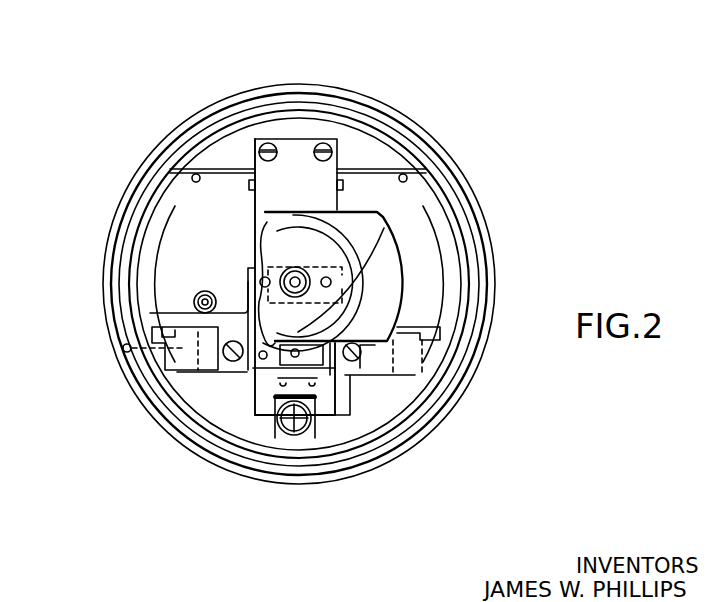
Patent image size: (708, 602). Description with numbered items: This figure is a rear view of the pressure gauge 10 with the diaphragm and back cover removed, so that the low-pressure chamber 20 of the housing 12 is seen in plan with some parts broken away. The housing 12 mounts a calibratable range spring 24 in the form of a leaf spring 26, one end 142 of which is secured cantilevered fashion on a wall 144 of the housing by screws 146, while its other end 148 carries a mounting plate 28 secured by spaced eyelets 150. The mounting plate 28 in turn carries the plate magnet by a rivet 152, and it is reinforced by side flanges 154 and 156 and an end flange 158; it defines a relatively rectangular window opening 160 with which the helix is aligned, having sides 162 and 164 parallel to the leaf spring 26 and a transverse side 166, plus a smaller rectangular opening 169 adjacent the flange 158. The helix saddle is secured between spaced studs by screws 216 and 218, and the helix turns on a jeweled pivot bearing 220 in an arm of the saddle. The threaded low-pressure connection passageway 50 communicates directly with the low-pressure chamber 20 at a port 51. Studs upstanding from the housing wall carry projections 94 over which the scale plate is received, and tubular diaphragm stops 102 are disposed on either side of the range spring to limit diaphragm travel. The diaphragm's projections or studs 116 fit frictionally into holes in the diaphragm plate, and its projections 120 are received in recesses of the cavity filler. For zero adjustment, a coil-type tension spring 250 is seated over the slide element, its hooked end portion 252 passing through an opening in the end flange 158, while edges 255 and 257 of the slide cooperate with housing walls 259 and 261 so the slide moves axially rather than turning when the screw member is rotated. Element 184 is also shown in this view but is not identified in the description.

The pressure gauge 10 is at (531, 133).
The housing 12 is at (489, 211).
The low-pressure chamber 20 is at (425, 378).
The calibratable range spring 24 is at (250, 198).
The leaf spring 26 is at (297, 150).
The mounting plate 28 is at (280, 380).
The low-pressure connection passageway 50 is at (418, 340).
The port 51 is at (440, 327).
The projection 94 is at (196, 174).
The tubular diaphragm stop 102 is at (196, 300).
The projections or studs 116 is at (328, 279).
The projections 120 is at (298, 275).
The end of leaf spring 142 is at (355, 145).
The wall 144 is at (350, 150).
The screws 146 is at (326, 150).
The other end of leaf spring 148 is at (258, 250).
The eyelets 150 is at (252, 282).
The rivet 152 is at (262, 357).
The side flange 154 is at (370, 405).
The side flange 156 is at (248, 290).
The end flange 158 is at (330, 430).
The window opening 160 is at (390, 375).
The side of window opening 162 is at (290, 386).
The side of window opening 164 is at (335, 343).
The side of window opening 166 is at (360, 415).
The smaller rectangular opening 169 is at (283, 418).
The lead 184 is at (250, 170).
The screw 216 is at (232, 353).
The screw 218 is at (447, 404).
The jeweled pivot bearing 220 is at (298, 341).
The coil-type tension spring 250 is at (308, 440).
The hooked end portion 252 is at (297, 440).
The edge of slide 255 is at (305, 435).
The edge of slide 257 is at (318, 436).
The housing wall 259 is at (283, 440).
The housing wall 261 is at (345, 425).